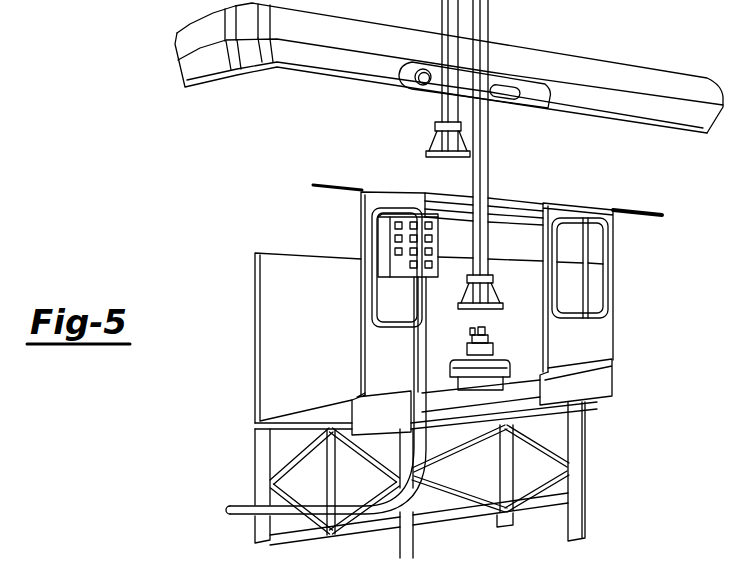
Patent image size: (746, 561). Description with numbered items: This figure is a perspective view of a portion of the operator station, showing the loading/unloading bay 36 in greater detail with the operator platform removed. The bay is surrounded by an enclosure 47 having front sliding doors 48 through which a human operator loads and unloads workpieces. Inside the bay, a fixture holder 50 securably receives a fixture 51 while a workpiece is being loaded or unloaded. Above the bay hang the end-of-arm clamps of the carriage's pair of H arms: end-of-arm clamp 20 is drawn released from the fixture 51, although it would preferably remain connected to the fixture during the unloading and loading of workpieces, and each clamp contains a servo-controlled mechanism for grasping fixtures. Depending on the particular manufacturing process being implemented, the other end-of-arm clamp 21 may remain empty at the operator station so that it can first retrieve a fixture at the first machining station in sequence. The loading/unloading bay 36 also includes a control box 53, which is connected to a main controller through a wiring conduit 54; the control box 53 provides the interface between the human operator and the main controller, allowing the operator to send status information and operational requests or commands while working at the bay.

The end-of-arm clamp 20 is at (500, 295).
The end-of-arm clamp 21 is at (431, 141).
The loading/unloading bay 36 is at (240, 380).
The enclosure 47 is at (268, 302).
The front sliding doors 48 is at (372, 335).
The fixture holder 50 is at (500, 350).
The fixture 51 is at (458, 348).
The control box 53 is at (385, 247).
The wiring conduit 54 is at (412, 358).